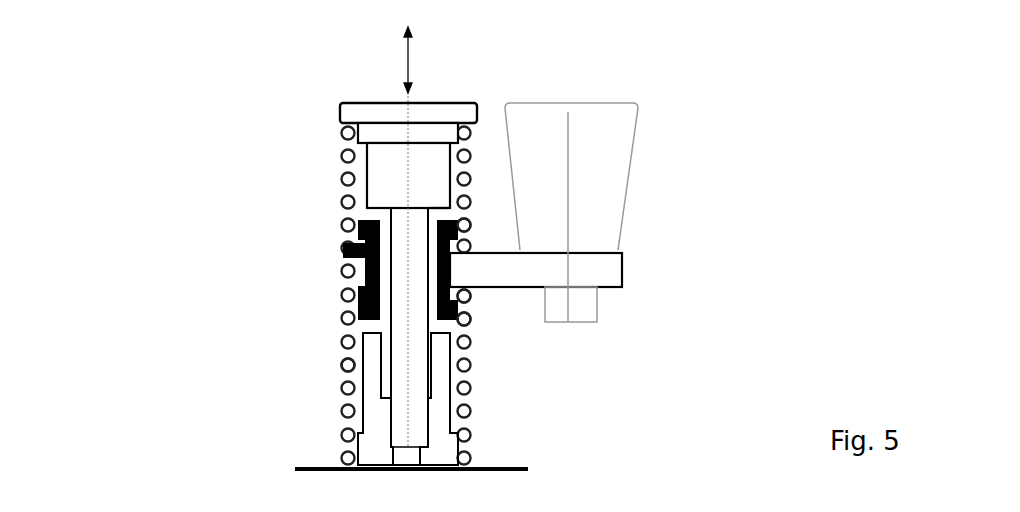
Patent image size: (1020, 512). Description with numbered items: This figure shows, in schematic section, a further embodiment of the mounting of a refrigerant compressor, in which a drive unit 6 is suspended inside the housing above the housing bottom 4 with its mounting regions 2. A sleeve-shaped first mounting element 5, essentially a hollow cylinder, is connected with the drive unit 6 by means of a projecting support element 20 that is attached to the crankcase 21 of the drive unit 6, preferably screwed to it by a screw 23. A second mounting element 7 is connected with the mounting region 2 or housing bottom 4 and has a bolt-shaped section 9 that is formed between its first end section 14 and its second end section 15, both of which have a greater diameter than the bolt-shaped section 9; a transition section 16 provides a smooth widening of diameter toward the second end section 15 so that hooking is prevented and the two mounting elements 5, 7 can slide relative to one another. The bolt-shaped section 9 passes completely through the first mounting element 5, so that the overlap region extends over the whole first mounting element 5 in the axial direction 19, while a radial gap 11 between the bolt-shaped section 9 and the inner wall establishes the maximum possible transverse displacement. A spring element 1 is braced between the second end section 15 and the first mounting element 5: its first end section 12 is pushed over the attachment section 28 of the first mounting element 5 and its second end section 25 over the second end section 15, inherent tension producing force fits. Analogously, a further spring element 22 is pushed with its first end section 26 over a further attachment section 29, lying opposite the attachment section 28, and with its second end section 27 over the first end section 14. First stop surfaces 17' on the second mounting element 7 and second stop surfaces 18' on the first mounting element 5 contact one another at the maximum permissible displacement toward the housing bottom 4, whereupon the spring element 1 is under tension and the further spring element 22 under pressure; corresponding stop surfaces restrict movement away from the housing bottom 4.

The spring element 1 is at (352, 207).
The mounting region 2 is at (290, 426).
The housing bottom 4 is at (303, 468).
The first mounting element 5 is at (372, 265).
The drive unit 6 is at (678, 212).
The second mounting element 7 is at (333, 294).
The bolt-shaped section 9 is at (398, 320).
The radial gap 11 is at (363, 264).
The first end section 12 is at (355, 248).
The first end section 14 is at (375, 443).
The second end section 15 is at (375, 137).
The transition section 16 is at (380, 175).
The first stop surfaces 17' is at (506, 115).
The second stop surfaces 18' is at (547, 167).
The axial direction 19 is at (403, 55).
The support element 20 is at (598, 270).
The crankcase 21 is at (603, 165).
The further spring element 22 is at (341, 368).
The screw 23 is at (470, 311).
The second end section 25 is at (345, 132).
The first end section 26 is at (472, 295).
The second end section 27 is at (466, 460).
The attachment section 28 is at (463, 223).
The further attachment section 29 is at (466, 314).